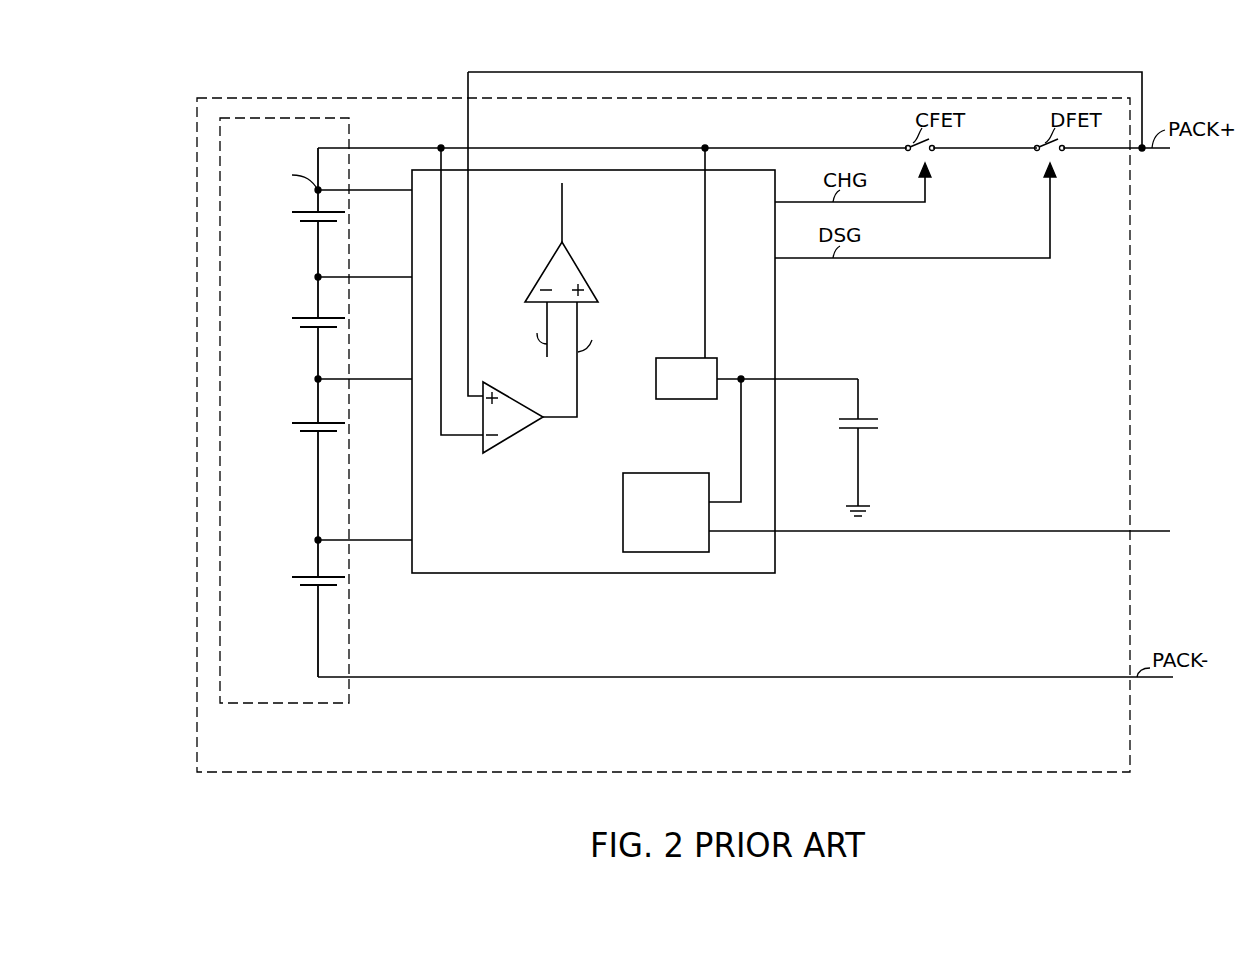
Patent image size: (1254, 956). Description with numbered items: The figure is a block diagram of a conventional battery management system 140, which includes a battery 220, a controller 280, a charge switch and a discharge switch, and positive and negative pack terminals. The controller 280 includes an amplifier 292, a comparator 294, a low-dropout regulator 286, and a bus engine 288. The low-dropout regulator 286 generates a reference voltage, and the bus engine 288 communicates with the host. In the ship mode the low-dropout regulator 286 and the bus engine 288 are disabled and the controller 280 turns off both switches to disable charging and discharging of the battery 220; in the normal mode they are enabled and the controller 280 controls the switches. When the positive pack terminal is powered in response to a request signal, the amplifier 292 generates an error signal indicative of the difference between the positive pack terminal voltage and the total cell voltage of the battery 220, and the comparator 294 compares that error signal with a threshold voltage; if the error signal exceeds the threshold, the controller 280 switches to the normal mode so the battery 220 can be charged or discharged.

The battery management system 140 is at (183, 123).
The battery 220 is at (287, 703).
The controller 280 is at (775, 338).
The low-dropout regulator (LDO) 286 is at (656, 387).
The bus engine 288 is at (623, 519).
The amplifier 292 is at (491, 448).
The comparator 294 is at (535, 281).